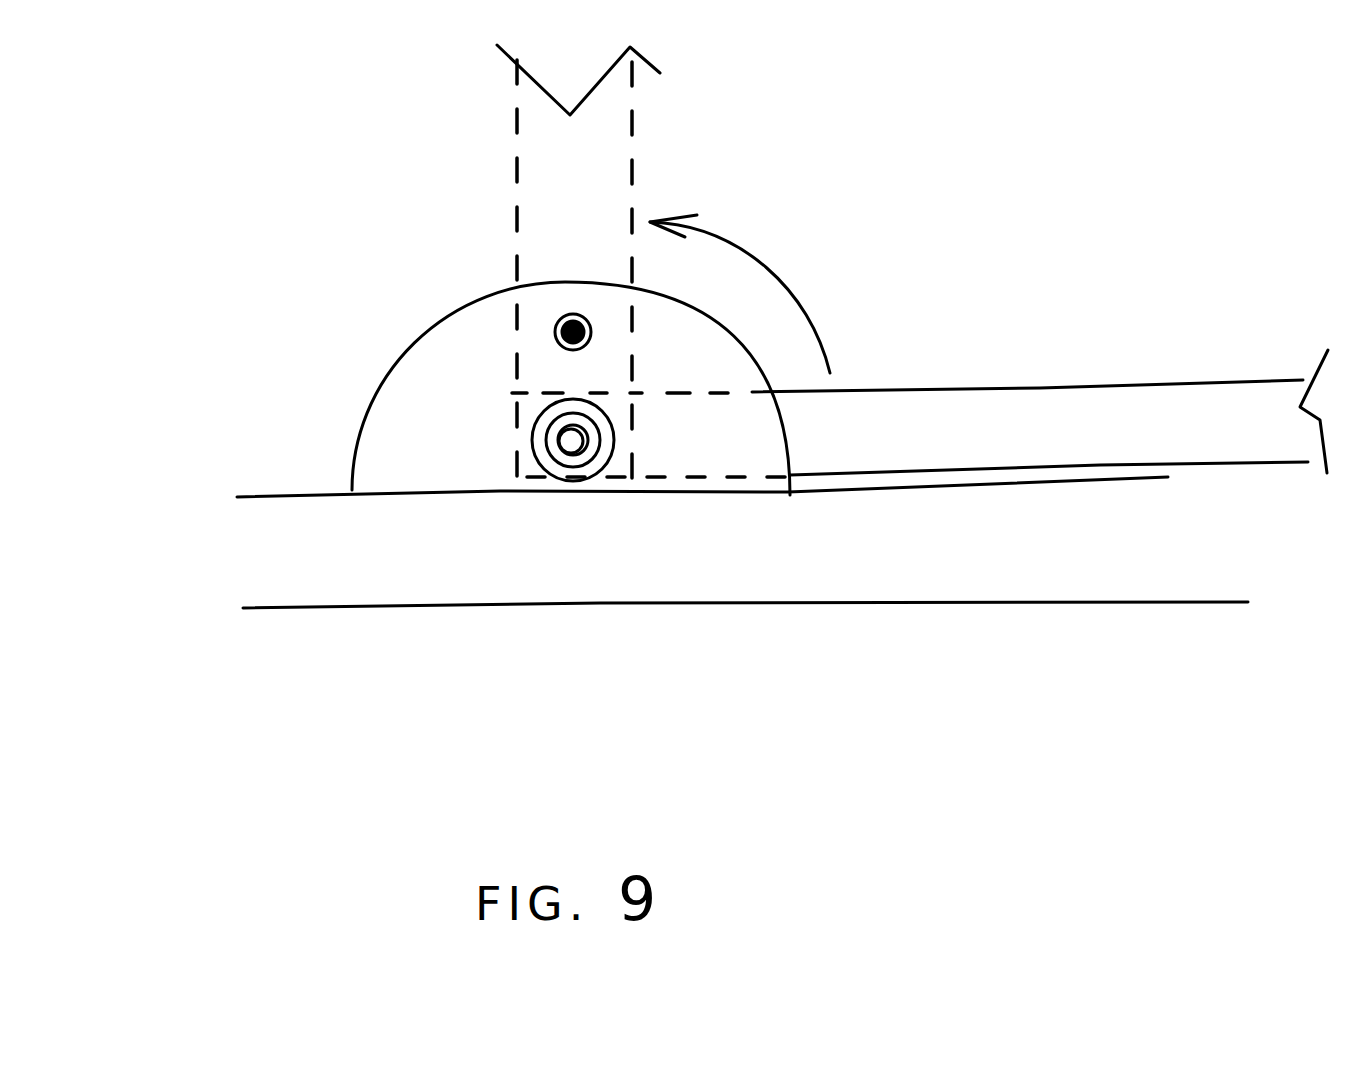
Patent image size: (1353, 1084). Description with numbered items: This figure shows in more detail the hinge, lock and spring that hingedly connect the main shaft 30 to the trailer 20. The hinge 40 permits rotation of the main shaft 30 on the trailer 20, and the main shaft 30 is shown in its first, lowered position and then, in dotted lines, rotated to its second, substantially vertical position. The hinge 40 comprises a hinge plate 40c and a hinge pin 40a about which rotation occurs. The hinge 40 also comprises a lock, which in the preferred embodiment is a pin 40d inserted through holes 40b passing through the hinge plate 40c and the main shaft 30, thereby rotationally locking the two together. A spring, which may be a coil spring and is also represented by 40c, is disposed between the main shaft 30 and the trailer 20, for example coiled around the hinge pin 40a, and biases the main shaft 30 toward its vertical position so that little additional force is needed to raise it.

The trailer 20 is at (1027, 583).
The main shaft 30 is at (613, 135).
The hinge 40 is at (368, 358).
The hinge pin 40a is at (404, 442).
The holes 40b is at (557, 328).
The hinge plate 40c is at (437, 353).
The pin 40d is at (590, 326).